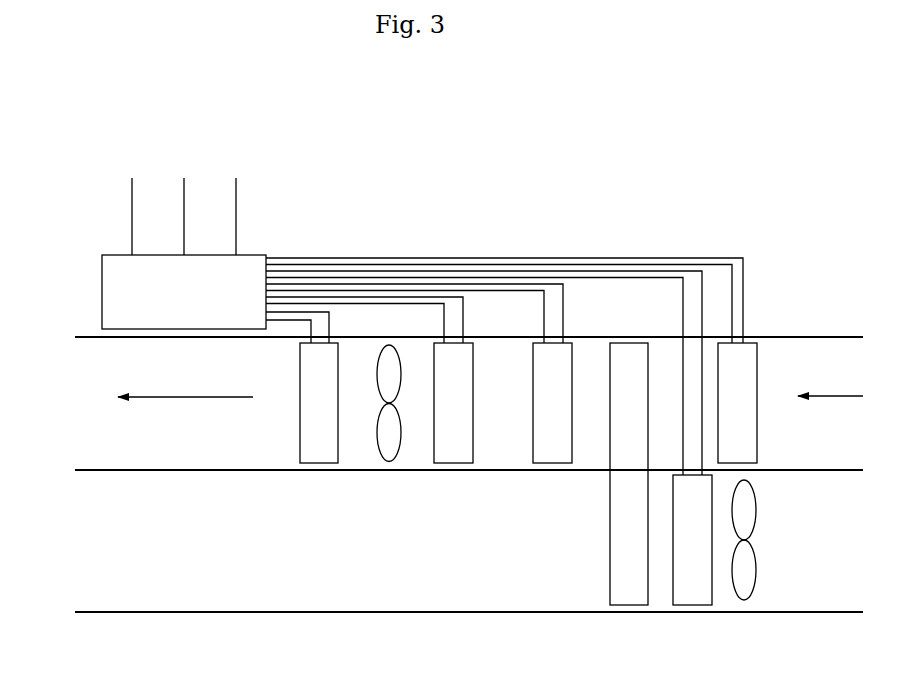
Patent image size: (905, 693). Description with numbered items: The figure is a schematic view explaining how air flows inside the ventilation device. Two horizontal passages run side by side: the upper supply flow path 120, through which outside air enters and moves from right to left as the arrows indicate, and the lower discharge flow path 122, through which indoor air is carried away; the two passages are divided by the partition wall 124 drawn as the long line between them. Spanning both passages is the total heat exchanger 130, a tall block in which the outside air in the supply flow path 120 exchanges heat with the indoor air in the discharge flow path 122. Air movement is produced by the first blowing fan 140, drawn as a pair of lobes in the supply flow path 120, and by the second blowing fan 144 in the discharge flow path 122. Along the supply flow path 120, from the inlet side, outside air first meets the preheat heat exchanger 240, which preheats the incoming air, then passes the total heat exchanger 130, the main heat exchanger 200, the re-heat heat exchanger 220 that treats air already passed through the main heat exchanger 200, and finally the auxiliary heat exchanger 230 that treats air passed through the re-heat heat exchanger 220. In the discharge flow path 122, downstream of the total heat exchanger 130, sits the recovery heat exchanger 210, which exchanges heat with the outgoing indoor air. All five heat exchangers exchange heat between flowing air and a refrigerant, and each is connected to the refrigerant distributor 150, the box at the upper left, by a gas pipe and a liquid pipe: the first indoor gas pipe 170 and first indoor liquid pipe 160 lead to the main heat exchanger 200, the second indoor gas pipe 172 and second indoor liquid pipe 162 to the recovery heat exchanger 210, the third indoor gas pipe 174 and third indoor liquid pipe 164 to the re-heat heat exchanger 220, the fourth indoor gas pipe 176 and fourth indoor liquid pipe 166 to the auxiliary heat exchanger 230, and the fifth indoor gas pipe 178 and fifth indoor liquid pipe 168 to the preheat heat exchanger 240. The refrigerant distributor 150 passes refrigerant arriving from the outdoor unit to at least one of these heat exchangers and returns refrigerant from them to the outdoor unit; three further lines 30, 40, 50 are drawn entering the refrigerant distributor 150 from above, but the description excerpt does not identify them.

The first sensor input 30 is at (184, 188).
The second sensor input 40 is at (236, 188).
The third sensor input 50 is at (132, 188).
The supply flow path 120 is at (784, 376).
The discharge flow path 122 is at (781, 574).
The partition wall 124 is at (202, 470).
The total heat exchanger 130 is at (630, 583).
The first blowing fan 140 is at (385, 447).
The second blowing fan 144 is at (747, 583).
The refrigerant distributor 150 is at (113, 286).
The first indoor liquid pipe 160 is at (527, 289).
The second indoor liquid pipe 162 is at (683, 296).
The third indoor liquid pipe 164 is at (433, 300).
The fourth indoor liquid pipe 166 is at (298, 320).
The fifth indoor liquid pipe 168 is at (715, 260).
The first indoor gas pipe 170 is at (563, 318).
The second indoor gas pipe 172 is at (702, 320).
The third indoor gas pipe 174 is at (466, 318).
The fourth indoor gas pipe 176 is at (329, 338).
The fifth indoor gas pipe 178 is at (745, 268).
The main heat exchanger 200 is at (552, 447).
The recovery heat exchanger 210 is at (694, 583).
The re-heat heat exchanger 220 is at (453, 447).
The auxiliary heat exchanger 230 is at (318, 447).
The preheat heat exchanger 240 is at (745, 438).